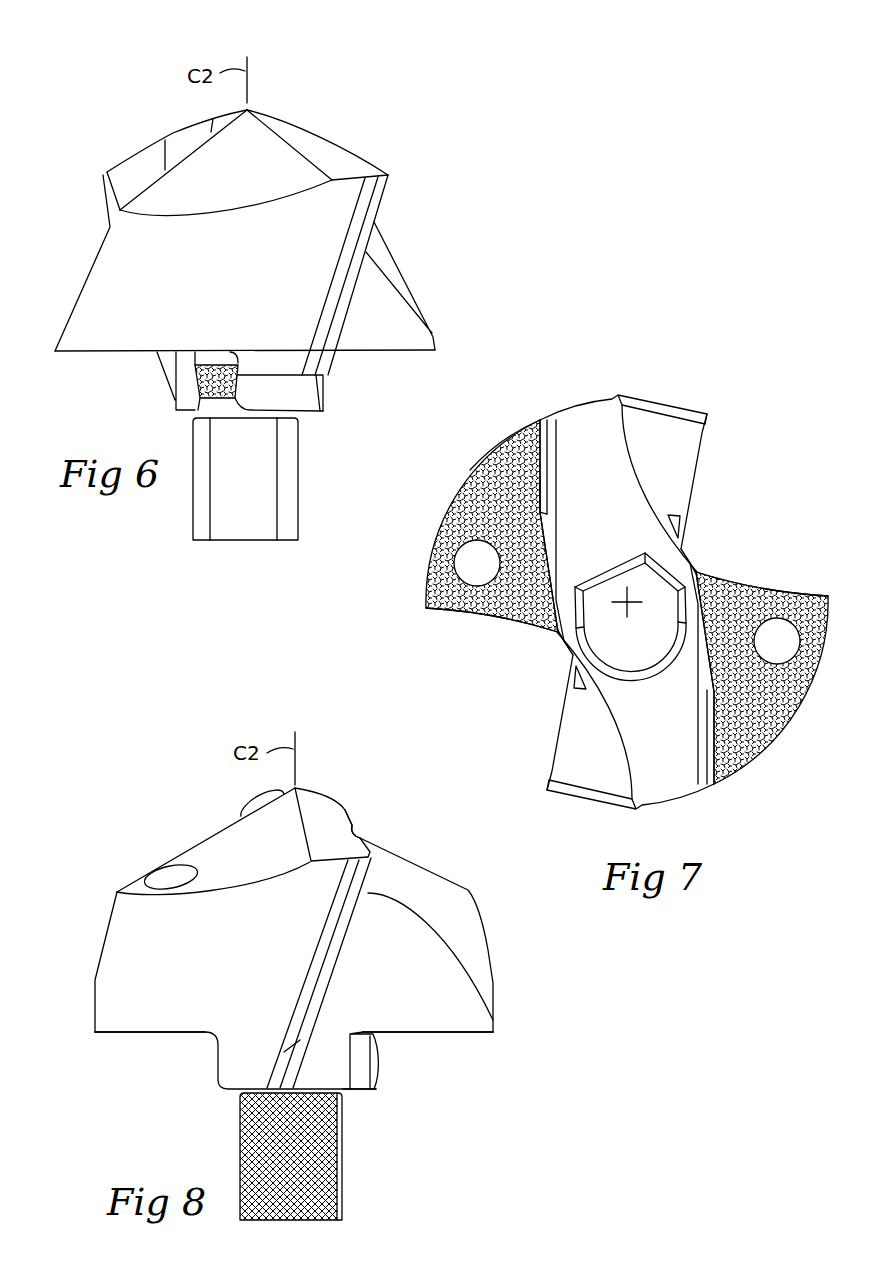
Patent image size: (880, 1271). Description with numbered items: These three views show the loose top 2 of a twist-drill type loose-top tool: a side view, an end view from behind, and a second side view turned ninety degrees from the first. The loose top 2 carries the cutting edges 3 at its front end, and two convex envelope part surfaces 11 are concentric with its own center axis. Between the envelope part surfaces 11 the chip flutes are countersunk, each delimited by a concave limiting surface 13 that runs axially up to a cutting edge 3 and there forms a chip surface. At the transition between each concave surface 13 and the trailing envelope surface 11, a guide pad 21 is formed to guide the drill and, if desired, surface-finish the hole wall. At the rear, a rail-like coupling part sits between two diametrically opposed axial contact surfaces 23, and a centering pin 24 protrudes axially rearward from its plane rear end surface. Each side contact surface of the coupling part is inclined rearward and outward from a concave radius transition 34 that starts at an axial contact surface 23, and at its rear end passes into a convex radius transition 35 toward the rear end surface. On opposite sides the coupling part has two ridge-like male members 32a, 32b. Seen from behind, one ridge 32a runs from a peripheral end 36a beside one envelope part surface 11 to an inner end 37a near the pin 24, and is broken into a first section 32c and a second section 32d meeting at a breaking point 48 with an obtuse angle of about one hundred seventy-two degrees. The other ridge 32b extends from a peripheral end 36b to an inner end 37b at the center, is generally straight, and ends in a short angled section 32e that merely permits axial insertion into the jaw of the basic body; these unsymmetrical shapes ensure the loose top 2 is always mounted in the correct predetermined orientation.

In FIG. 6, the loose top 2 is at (408, 162).
In FIG. 8, the cutting edges 3 is at (358, 836).
In FIG. 6, the convex envelope part surfaces 11 is at (238, 285).
In FIG. 7, the convex envelope part surfaces 11 is at (440, 543).
In FIG. 8, the convex envelope part surfaces 11 is at (251, 968).
In FIG. 7, the concave limiting surface 13 is at (674, 470).
In FIG. 8, the concave limiting surface 13 is at (434, 1003).
In FIG. 8, the guide pad 21 is at (340, 944).
In FIG. 8, the axial contact surfaces 23 is at (142, 1034).
In FIG. 6, the centering pin 24 is at (193, 530).
In FIG. 7, the male member (ridge) 32a is at (533, 537).
In FIG. 7, the male member (ridge) 32b is at (737, 620).
In FIG. 7, the first section of ridge 32c is at (523, 460).
In FIG. 7, the second section of ridge 32d is at (555, 603).
In FIG. 7, the short angled section 32e is at (705, 590).
In FIG. 8, the concave radius transition 34 is at (365, 1027).
In FIG. 8, the convex radius transition 35 is at (373, 1088).
In FIG. 7, the peripheral end 36a is at (541, 421).
In FIG. 7, the peripheral end 36b is at (710, 785).
In FIG. 7, the inner end 37a is at (567, 647).
In FIG. 7, the inner end 37b is at (700, 565).
In FIG. 7, the breaking point 48 is at (540, 527).